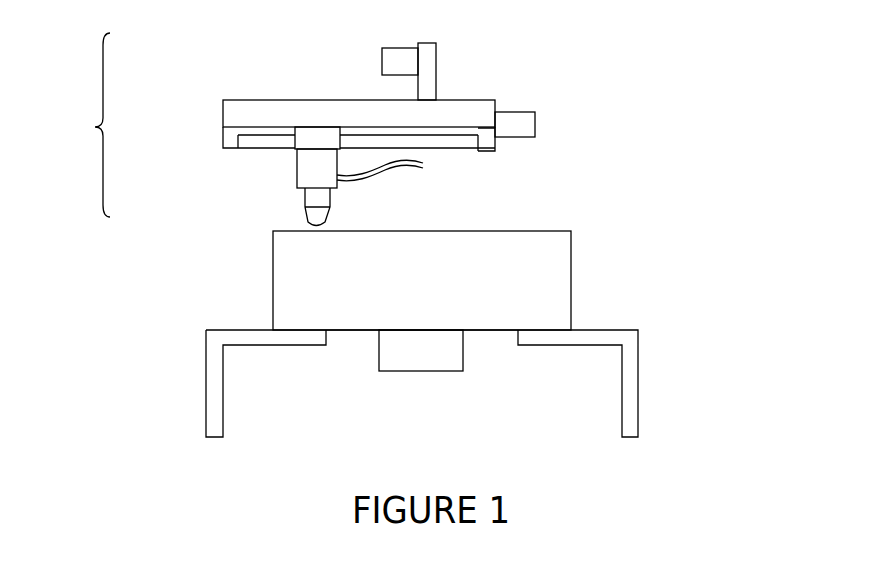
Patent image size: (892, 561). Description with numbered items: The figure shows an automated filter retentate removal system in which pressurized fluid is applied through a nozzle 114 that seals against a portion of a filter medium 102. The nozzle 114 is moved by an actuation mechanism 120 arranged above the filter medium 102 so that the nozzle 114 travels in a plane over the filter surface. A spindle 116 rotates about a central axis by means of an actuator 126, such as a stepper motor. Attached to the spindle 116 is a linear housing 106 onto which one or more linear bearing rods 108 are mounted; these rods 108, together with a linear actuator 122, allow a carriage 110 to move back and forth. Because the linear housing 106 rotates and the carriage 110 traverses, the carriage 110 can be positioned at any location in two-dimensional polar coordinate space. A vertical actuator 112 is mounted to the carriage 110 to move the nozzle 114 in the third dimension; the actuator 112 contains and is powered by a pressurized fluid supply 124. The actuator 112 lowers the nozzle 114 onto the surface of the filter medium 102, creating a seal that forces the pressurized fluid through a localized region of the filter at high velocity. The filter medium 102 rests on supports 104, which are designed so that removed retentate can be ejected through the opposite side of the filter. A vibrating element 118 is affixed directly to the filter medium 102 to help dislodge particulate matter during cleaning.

The filter medium 102 is at (588, 262).
The supports 104 is at (652, 370).
The linear housing 106 is at (498, 97).
The linear bearing rods 108 is at (448, 150).
The carriage 110 is at (290, 148).
The vertical actuator 112 is at (292, 180).
The nozzle 114 is at (290, 217).
The spindle 116 is at (450, 65).
The vibrating element 118 is at (425, 388).
The actuation mechanism 120 is at (81, 125).
The linear actuator 122 is at (550, 127).
The pressurized fluid supply 124 is at (382, 173).
The actuator 126 is at (370, 62).